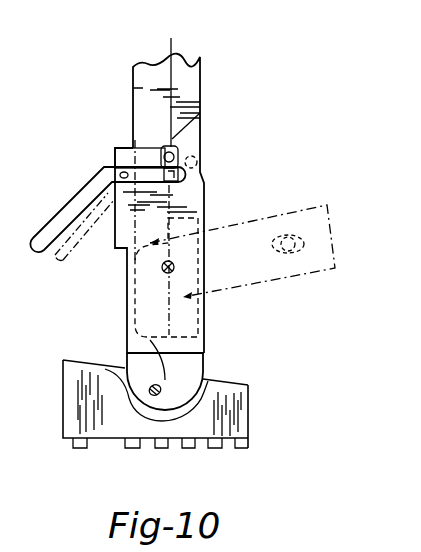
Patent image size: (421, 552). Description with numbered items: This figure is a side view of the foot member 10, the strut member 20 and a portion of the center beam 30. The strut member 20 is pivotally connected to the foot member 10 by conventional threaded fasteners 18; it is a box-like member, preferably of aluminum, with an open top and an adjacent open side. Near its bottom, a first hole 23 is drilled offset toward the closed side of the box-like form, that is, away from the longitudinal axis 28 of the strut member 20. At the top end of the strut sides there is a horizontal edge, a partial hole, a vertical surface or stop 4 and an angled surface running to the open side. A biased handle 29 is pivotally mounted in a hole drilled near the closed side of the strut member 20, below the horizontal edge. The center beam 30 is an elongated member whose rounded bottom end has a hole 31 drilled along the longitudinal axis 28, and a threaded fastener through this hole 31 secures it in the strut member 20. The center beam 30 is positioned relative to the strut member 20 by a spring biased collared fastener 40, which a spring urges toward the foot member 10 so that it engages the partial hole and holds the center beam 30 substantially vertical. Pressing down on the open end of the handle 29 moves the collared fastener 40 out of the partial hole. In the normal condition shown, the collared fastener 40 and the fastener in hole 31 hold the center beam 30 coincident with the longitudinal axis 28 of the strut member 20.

The vertical surface or stop 4 is at (200, 113).
The foot member 10 is at (241, 383).
The threaded fasteners 18 is at (151, 393).
The strut member 20 is at (205, 351).
The first hole 23 is at (150, 340).
The longitudinal axis 28 is at (173, 40).
The biased handle 29 is at (63, 205).
The center beam 30 is at (205, 92).
The hole 31 is at (169, 277).
The spring biased collared fastener 40 is at (183, 148).